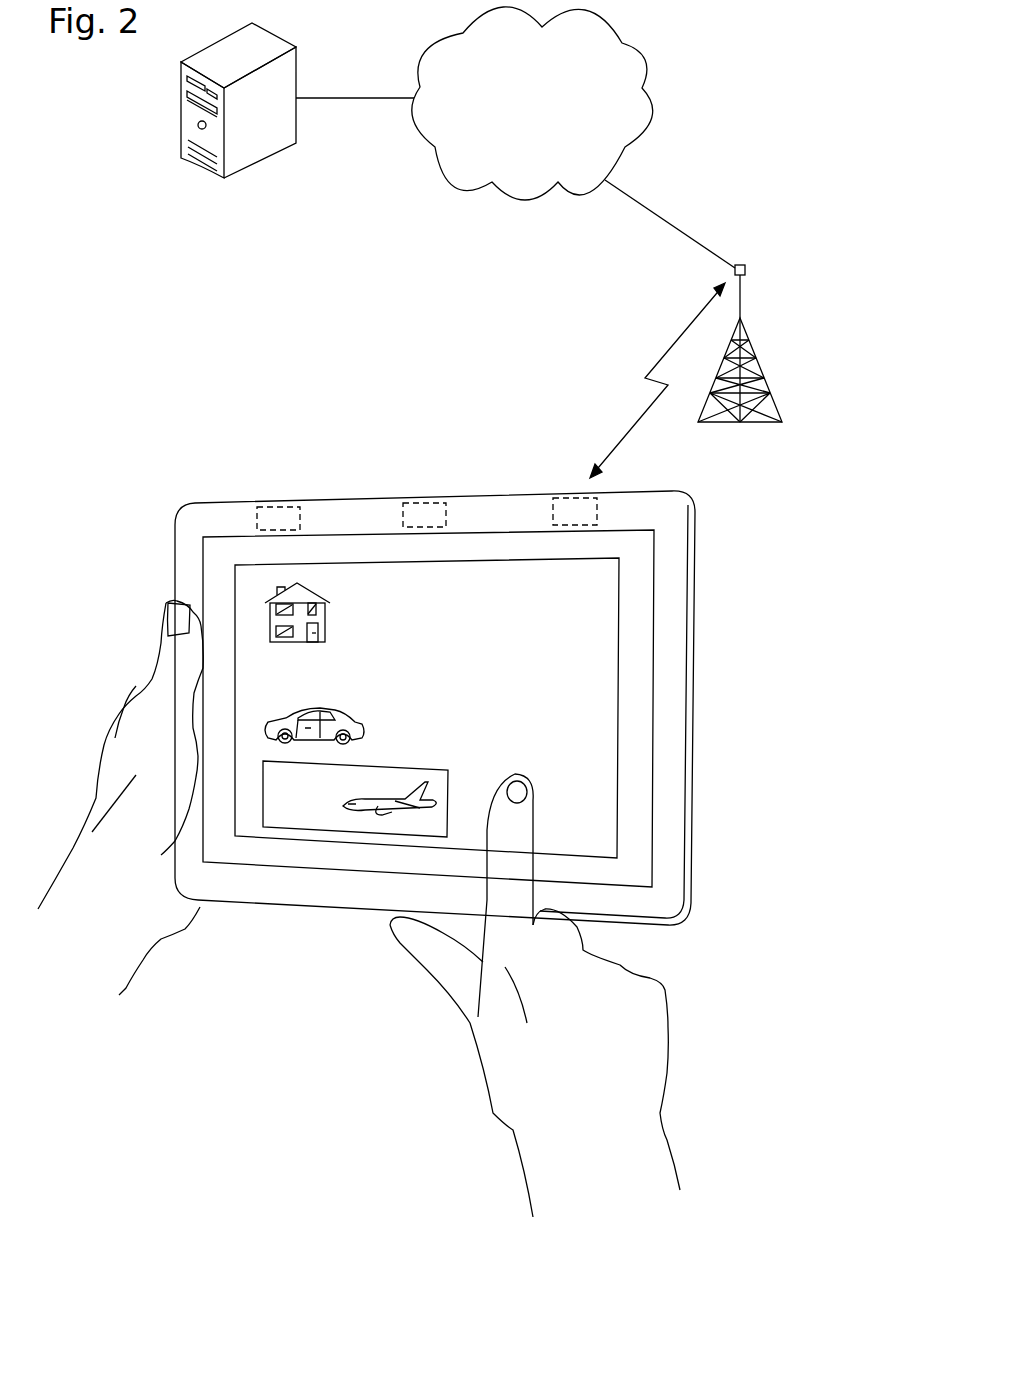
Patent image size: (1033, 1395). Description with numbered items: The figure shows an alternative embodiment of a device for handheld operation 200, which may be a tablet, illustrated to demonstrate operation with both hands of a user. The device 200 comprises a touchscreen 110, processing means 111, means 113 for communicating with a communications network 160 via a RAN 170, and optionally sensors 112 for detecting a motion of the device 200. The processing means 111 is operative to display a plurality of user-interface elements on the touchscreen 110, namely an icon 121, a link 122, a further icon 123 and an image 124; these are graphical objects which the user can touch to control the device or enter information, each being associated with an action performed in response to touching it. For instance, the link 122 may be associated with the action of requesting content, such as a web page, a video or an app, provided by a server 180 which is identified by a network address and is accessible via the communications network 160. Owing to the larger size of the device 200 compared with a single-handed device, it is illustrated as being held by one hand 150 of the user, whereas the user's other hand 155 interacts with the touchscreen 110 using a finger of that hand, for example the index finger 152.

The touchscreen 110 is at (584, 604).
The processing means 111 is at (280, 507).
The sensors 112 is at (408, 504).
The means for communicating 113 is at (565, 499).
The icon 121 is at (325, 620).
The link 122 is at (385, 672).
The icon 123 is at (362, 725).
The image 124 is at (298, 820).
The hand 150 is at (569, 994).
The index finger 152 is at (518, 813).
The other hand 155 is at (122, 701).
The communications network 160 is at (545, 114).
The RAN 170 is at (758, 360).
The server 180 is at (238, 178).
The device for handheld operation 200 is at (250, 497).